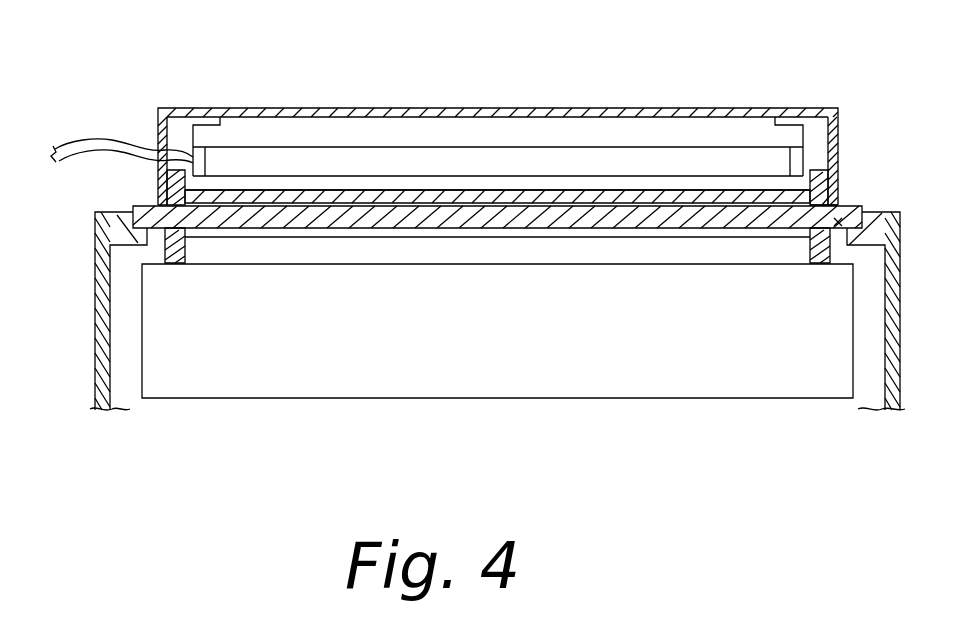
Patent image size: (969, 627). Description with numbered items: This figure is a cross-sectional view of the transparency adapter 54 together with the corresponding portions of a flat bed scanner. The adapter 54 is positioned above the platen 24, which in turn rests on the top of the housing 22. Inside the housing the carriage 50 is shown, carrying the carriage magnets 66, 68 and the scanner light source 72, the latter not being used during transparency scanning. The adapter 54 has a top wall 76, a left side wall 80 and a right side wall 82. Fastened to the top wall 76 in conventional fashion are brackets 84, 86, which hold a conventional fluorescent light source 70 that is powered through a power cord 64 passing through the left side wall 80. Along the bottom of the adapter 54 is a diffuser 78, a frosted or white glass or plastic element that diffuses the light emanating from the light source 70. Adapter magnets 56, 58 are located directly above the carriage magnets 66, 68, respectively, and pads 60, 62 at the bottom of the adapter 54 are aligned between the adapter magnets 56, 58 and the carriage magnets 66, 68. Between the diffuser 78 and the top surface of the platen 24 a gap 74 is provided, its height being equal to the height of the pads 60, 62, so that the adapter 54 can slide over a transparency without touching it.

The housing 22 is at (95, 308).
The platen 24 is at (838, 224).
The carriage 50 is at (718, 363).
The transparency adapter 54 is at (611, 106).
The adapter magnet 56 is at (828, 171).
The adapter magnet 58 is at (174, 178).
The pad 60 is at (823, 204).
The pad 62 is at (167, 205).
The power cord 64 is at (84, 140).
The carriage magnet 66 is at (818, 248).
The carriage magnet 68 is at (176, 247).
The fluorescent light source 70 is at (412, 160).
The scanner light source 72 is at (475, 249).
The gap 74 is at (293, 206).
The top wall 76 is at (317, 109).
The diffuser 78 is at (460, 196).
The left side wall 80 is at (158, 133).
The right side wall 82 is at (839, 138).
The bracket 84 is at (204, 120).
The bracket 86 is at (787, 122).